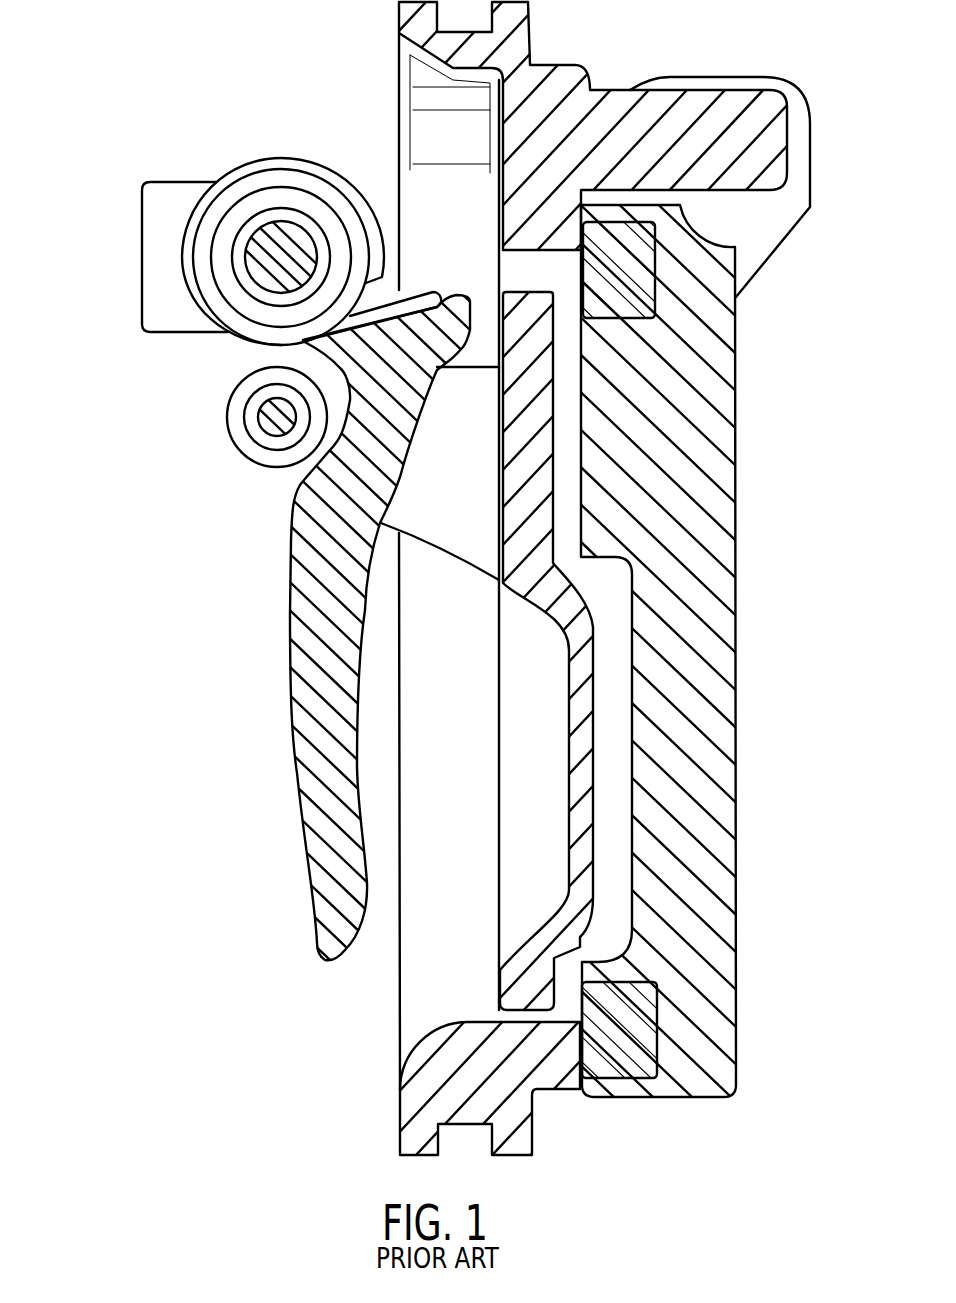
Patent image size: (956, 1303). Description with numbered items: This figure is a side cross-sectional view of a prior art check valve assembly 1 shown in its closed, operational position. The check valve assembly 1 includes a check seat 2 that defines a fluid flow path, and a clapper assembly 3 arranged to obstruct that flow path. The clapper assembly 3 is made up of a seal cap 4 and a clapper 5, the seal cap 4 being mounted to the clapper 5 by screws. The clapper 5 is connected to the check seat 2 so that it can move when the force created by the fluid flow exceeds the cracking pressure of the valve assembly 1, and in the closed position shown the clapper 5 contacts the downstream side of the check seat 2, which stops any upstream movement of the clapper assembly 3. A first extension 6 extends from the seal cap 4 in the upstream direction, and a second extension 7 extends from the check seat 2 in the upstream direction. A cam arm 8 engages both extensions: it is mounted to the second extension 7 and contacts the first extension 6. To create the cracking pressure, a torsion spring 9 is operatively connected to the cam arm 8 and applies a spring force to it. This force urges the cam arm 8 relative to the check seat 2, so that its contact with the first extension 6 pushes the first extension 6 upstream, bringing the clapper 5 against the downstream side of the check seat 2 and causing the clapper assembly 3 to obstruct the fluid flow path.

The check valve assembly 1 is at (119, 355).
The check seat 2 is at (562, 92).
The clapper assembly 3 is at (756, 375).
The seal cap 4 is at (583, 819).
The clapper 5 is at (720, 550).
The first extension 6 is at (272, 418).
The second extension 7 is at (282, 238).
The cam arm 8 is at (300, 687).
The torsion spring 9 is at (227, 175).